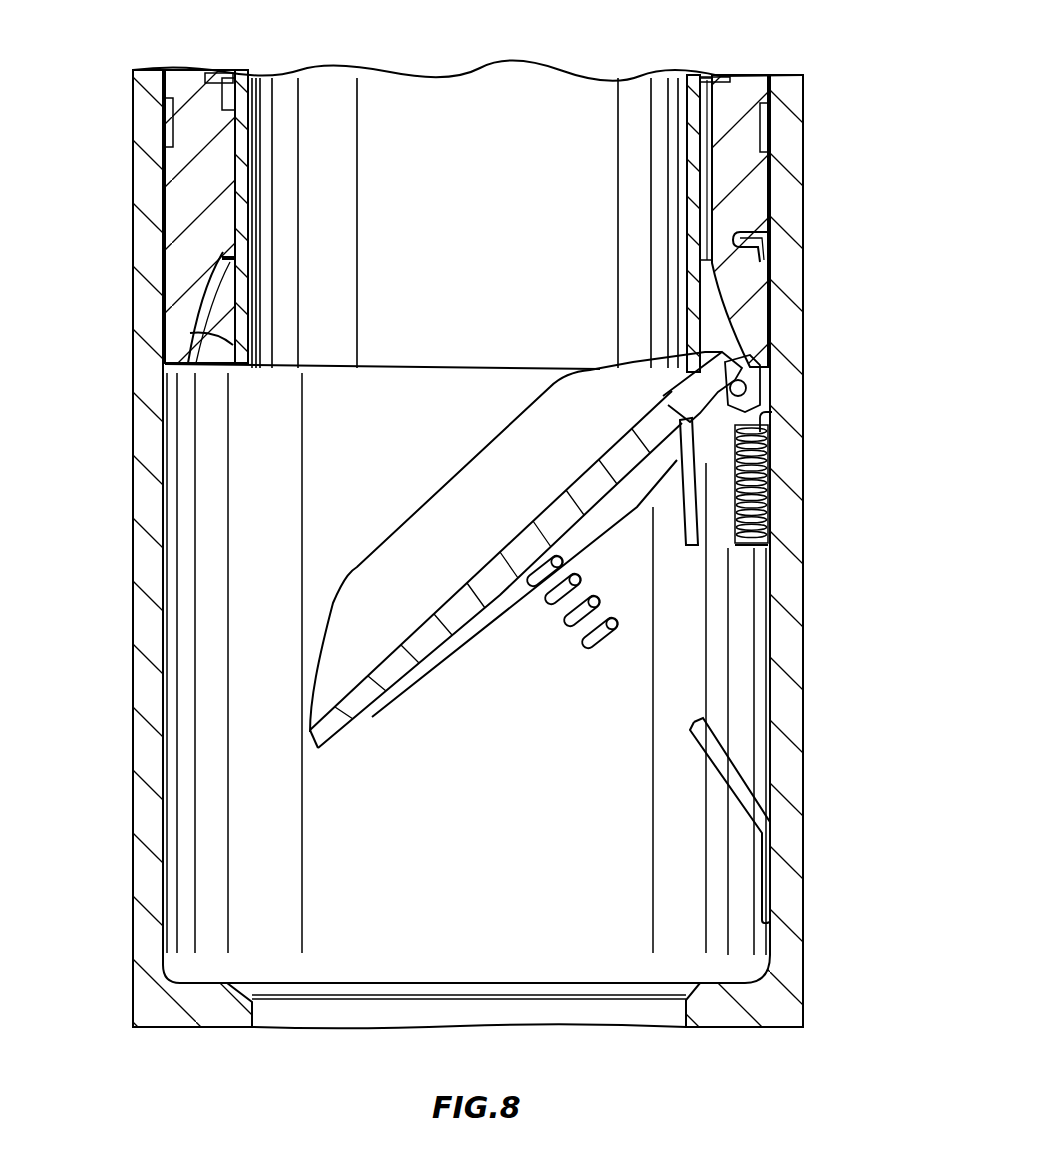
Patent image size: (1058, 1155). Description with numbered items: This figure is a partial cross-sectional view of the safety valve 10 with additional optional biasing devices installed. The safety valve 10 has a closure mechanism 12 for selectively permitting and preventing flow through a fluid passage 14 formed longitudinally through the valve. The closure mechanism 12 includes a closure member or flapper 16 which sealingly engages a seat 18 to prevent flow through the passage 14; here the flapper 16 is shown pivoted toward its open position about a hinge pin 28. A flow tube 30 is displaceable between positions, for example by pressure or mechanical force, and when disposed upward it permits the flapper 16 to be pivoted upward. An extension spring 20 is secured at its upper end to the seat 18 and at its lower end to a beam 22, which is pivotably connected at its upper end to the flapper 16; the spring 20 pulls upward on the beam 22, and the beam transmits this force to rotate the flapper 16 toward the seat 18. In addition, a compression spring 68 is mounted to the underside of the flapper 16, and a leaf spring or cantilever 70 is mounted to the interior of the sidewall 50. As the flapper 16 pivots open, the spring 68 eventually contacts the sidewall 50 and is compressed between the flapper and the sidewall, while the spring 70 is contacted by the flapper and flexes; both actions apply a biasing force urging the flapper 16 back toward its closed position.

The safety valve 10 is at (838, 76).
The closure mechanism 12 is at (349, 765).
The fluid passage 14 is at (462, 222).
The flapper 16 is at (397, 703).
The seat 18 is at (252, 364).
The extension spring 20 is at (772, 445).
The beam 22 is at (700, 532).
The hinge pin 28 is at (748, 383).
The flow tube 30 is at (233, 203).
The sidewall 50 is at (803, 602).
The compression spring 68 is at (573, 650).
The leaf spring 70 is at (735, 780).